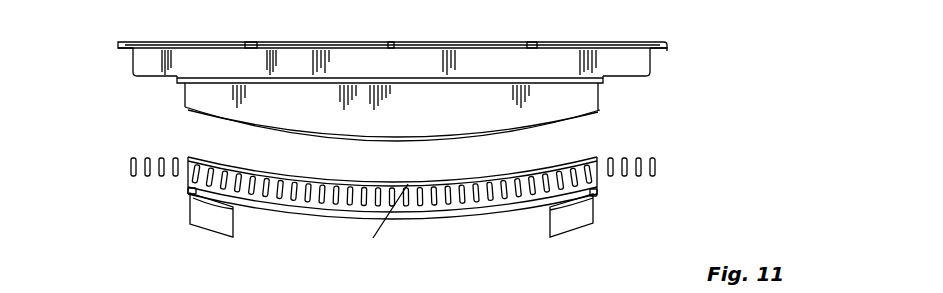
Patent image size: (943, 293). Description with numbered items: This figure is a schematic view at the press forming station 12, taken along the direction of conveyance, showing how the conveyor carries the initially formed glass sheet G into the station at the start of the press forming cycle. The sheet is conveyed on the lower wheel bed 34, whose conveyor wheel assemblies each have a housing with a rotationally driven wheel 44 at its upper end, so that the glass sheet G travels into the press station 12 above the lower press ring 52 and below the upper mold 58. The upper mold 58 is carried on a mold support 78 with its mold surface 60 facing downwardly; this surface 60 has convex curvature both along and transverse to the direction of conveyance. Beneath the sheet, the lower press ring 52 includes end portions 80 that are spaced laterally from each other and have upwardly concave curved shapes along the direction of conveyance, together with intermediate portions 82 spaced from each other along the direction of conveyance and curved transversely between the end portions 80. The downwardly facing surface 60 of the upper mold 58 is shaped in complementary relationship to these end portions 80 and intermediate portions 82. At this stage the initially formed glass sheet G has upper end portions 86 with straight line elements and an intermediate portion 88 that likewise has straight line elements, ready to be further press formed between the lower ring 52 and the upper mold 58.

The press forming station 12 is at (112, 127).
The upper mold 58 is at (678, 62).
The mold support 78 is at (537, 64).
The downwardly facing mold surface 60 is at (368, 136).
The lower wheel bed 34 is at (668, 165).
The lower press ring 52 is at (612, 192).
The upper end portions 86 is at (195, 150).
The intermediate portions 82 is at (420, 216).
The wheel 44 is at (312, 200).
The intermediate portion 88 is at (385, 223).
The glass sheet G is at (392, 182).
The end portions 80 is at (188, 207).